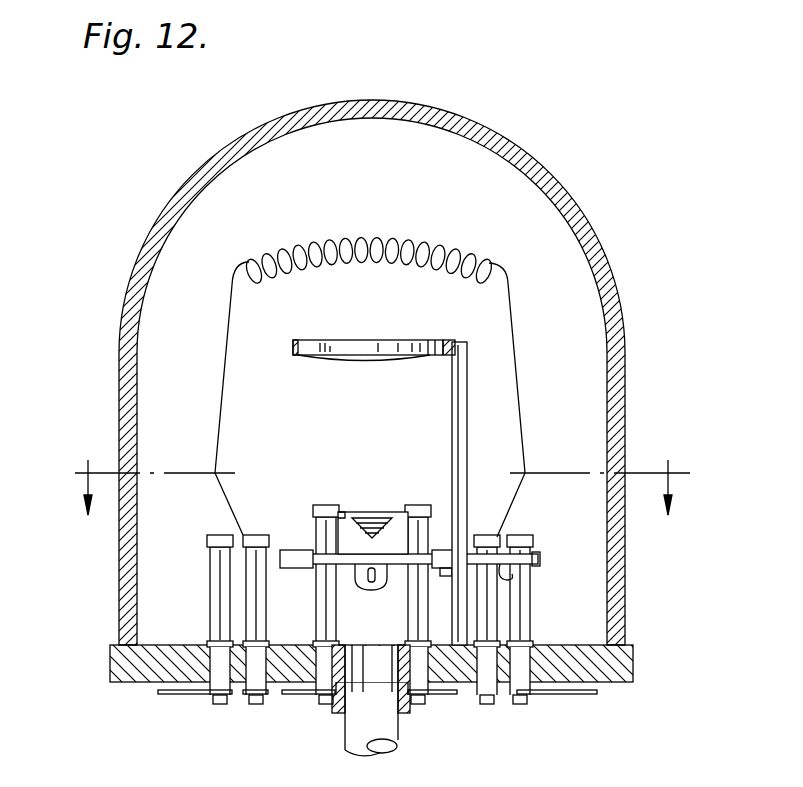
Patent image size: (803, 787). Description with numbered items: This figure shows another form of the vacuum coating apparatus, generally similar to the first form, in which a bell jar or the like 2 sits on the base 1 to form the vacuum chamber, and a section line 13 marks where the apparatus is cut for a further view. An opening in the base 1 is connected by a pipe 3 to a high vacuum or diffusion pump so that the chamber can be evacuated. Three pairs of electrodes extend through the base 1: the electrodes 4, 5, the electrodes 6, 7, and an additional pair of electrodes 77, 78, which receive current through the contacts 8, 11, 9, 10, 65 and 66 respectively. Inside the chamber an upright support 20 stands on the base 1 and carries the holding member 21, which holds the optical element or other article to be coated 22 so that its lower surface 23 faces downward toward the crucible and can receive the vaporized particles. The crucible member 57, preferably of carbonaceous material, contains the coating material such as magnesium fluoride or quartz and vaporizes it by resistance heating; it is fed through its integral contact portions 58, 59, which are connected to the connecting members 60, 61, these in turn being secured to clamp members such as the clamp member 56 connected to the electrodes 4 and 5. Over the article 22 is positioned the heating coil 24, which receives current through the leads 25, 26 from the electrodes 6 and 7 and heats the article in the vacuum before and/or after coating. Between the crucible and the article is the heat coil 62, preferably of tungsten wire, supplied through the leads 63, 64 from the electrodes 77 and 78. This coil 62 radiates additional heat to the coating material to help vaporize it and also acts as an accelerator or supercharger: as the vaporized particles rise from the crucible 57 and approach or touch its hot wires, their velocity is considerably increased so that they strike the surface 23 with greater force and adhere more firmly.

The base 1 is at (634, 668).
The bell jar 2 is at (625, 612).
The pipe 3 is at (399, 736).
The electrode 4 is at (210, 605).
The electrode 5 is at (531, 620).
The electrode 6 is at (266, 605).
The electrode 7 is at (497, 602).
The contact 8 is at (213, 702).
The contact 9 is at (256, 702).
The contact 10 is at (488, 706).
The contact 11 is at (560, 696).
The section line 13- 13 is at (370, 487).
The upright support 20 is at (467, 440).
The holding member 21 is at (455, 350).
The article to be coated 22 is at (347, 340).
The lower surface 23 is at (345, 360).
The heating coil 24 is at (384, 220).
The lead 25 is at (222, 372).
The lead 26 is at (522, 392).
The clamp member 56 is at (513, 578).
The crucible member 57 is at (370, 590).
The contact portion 58 is at (305, 553).
The contact portion 59 is at (452, 552).
The connecting member 60 is at (292, 550).
The connecting member 61 is at (446, 576).
The heat coil 62 is at (380, 518).
The lead 63 is at (345, 512).
The lead 64 is at (402, 512).
The contact 65 is at (326, 702).
The contact 66 is at (425, 702).
The electrode 77 is at (336, 620).
The electrode 78 is at (412, 612).